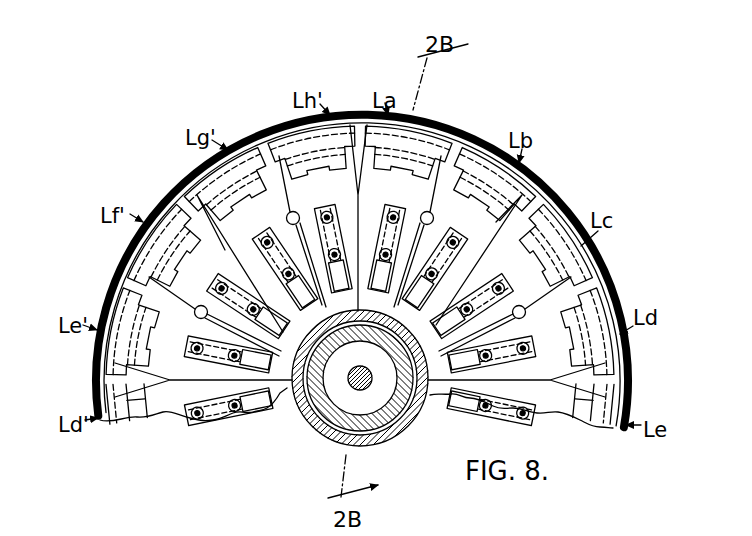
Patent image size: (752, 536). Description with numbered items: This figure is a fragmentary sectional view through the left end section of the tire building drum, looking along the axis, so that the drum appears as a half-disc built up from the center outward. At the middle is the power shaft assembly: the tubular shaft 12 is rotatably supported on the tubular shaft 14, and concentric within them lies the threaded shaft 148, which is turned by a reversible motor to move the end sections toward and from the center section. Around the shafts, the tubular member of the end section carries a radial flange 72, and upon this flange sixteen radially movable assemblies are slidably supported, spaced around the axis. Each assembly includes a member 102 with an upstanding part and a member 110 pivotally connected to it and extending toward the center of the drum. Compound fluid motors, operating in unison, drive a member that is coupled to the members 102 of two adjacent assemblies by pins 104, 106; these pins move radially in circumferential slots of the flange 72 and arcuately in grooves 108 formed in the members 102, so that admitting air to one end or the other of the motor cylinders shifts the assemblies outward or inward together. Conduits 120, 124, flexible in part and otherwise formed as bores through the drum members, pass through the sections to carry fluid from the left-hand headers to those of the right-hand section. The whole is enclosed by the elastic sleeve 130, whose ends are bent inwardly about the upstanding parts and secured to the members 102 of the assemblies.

The tubular shaft 12 is at (408, 425).
The tubular shaft 14 is at (373, 345).
The shaft 148 is at (375, 388).
The radial flange 72 is at (290, 400).
The member 102 is at (357, 194).
The pin 104 is at (387, 228).
The pin 106 is at (456, 202).
The groove 108 is at (359, 251).
The member 110 is at (606, 265).
The conduit 120 is at (286, 220).
The conduit 124 is at (525, 319).
The elastic sleeve 130 is at (543, 186).